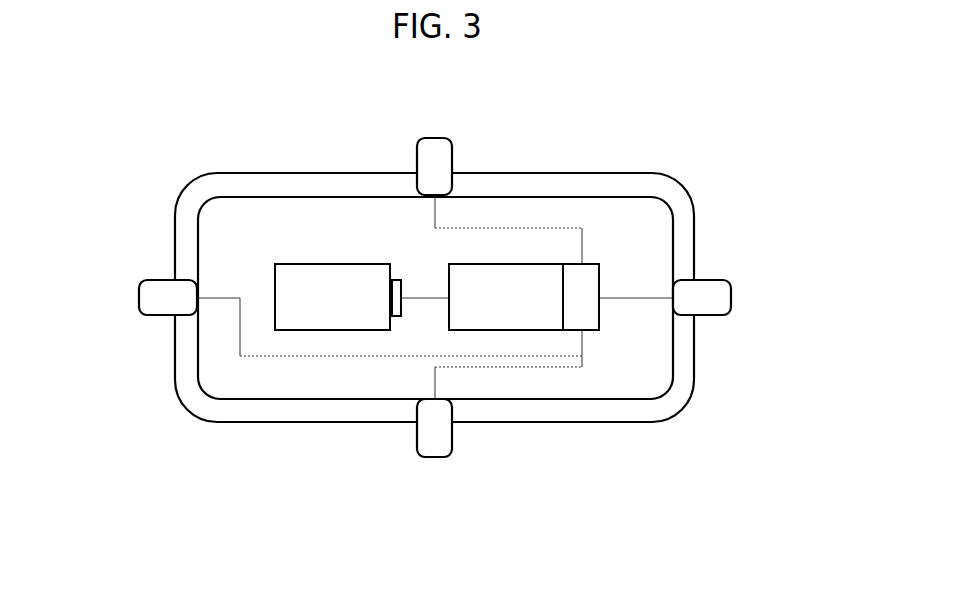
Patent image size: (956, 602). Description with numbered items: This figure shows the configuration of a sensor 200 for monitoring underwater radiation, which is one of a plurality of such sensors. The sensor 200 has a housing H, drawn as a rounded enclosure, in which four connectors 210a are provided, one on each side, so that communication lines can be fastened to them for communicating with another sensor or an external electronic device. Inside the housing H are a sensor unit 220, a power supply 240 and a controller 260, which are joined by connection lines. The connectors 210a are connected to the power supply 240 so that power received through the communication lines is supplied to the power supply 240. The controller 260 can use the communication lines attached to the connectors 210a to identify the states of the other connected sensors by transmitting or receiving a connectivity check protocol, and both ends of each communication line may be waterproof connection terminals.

The sensor 200 is at (217, 79).
The connectors 210a is at (433, 135).
The sensor unit 220 is at (397, 277).
The power supply 240 is at (593, 280).
The controller 260 is at (515, 280).
The housing H is at (685, 232).